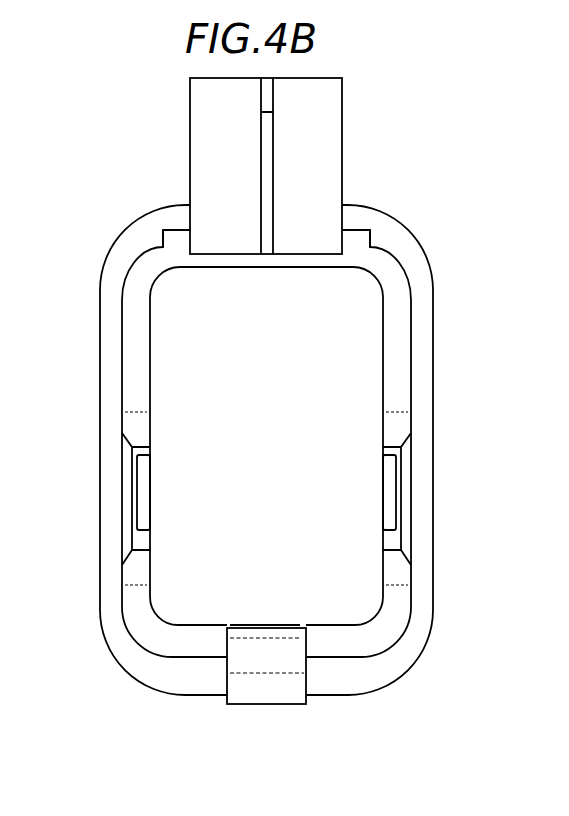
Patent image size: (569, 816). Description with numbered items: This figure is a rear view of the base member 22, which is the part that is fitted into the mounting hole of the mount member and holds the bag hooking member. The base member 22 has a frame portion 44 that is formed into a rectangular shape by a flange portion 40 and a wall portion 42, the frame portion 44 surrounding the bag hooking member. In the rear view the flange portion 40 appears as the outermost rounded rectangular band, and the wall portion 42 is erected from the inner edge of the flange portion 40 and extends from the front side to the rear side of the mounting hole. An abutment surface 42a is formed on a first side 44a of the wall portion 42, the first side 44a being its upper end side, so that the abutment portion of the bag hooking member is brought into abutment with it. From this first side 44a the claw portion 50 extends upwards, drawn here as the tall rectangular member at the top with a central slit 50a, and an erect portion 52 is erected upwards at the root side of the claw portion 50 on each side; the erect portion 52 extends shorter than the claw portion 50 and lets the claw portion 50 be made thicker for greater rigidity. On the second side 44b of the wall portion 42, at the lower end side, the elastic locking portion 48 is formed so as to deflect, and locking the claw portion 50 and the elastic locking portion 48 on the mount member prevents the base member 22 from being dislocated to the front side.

The base member 22 is at (368, 733).
The flange portion 40 is at (422, 385).
The wall portion 42 is at (488, 407).
The abutment surface 42a is at (225, 260).
The frame portion 44 is at (318, 450).
The first side 44a is at (253, 268).
The second side 44b is at (265, 627).
The elastic locking portion 48 is at (257, 687).
The claw portion 50 is at (328, 100).
The plug slit 50a is at (268, 155).
The erect portion 52 is at (177, 235).